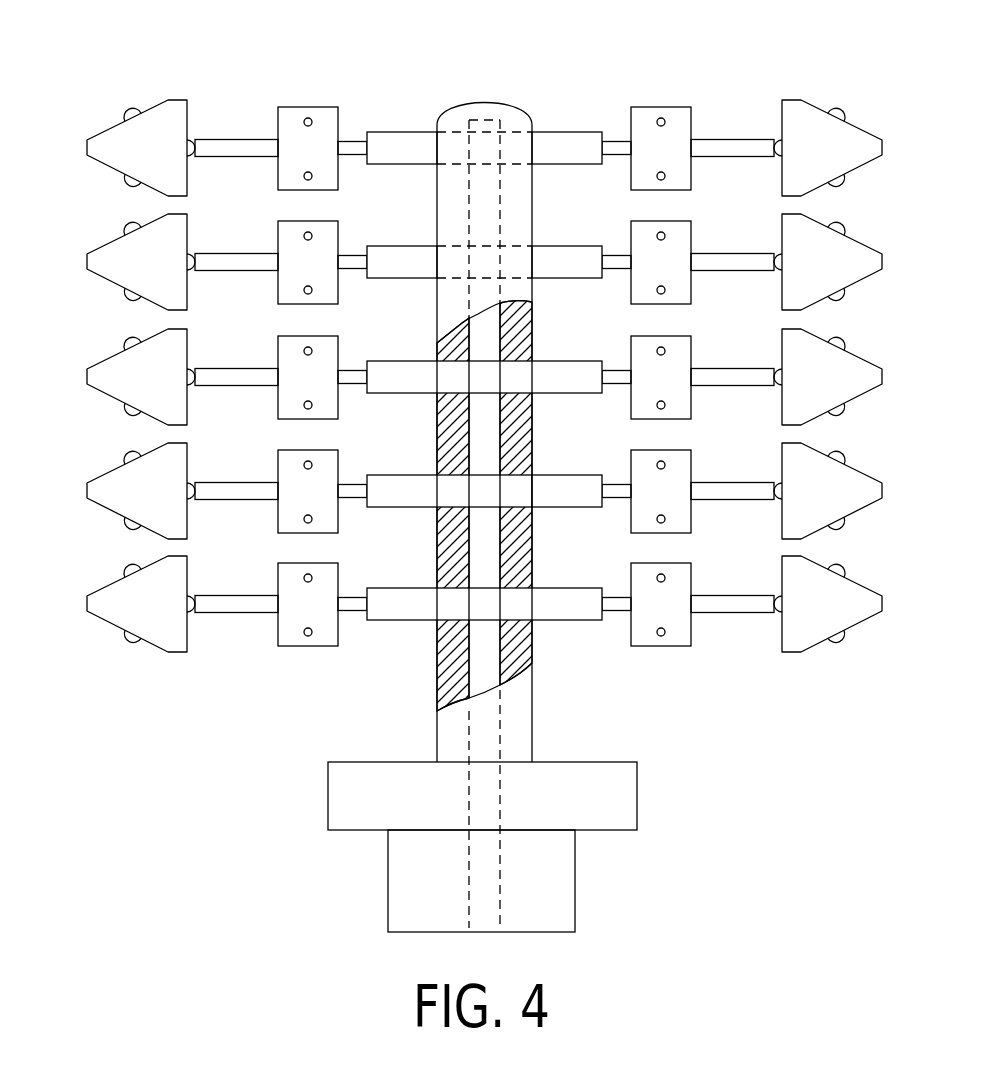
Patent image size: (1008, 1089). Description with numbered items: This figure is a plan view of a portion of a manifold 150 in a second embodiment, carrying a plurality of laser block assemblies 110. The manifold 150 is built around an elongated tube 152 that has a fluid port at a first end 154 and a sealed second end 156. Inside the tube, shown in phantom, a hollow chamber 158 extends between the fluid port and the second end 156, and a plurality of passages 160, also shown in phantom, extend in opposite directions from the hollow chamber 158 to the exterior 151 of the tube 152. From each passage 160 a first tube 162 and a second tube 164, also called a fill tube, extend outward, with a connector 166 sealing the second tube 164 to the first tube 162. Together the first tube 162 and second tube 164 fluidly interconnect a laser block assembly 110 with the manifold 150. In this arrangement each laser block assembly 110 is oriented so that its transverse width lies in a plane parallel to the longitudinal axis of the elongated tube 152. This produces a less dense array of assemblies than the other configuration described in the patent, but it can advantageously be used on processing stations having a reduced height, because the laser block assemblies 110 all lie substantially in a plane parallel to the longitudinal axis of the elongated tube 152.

The laser block assembly 110 is at (108, 142).
The manifold 150 is at (468, 485).
The exterior 151 is at (532, 562).
The elongated tube 152 is at (520, 207).
The first end 154 is at (565, 913).
The second end 156 is at (470, 103).
The hollow chamber 158 is at (480, 660).
The passage 160 is at (517, 605).
The first tube 162 is at (575, 485).
The second tube 164 is at (723, 493).
The connector 166 is at (678, 462).